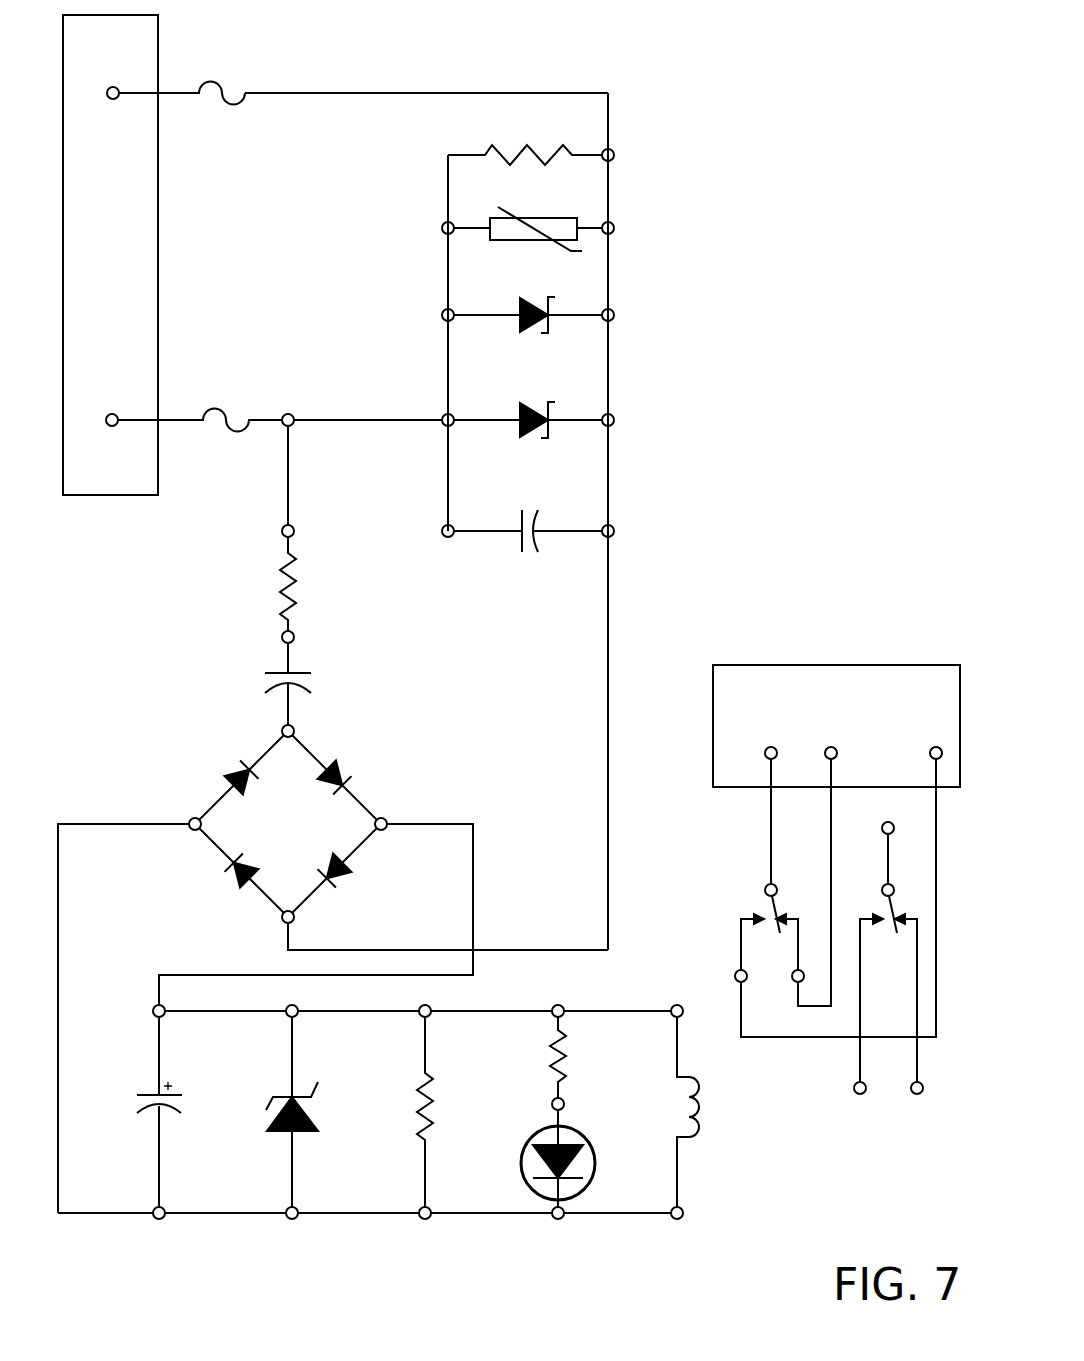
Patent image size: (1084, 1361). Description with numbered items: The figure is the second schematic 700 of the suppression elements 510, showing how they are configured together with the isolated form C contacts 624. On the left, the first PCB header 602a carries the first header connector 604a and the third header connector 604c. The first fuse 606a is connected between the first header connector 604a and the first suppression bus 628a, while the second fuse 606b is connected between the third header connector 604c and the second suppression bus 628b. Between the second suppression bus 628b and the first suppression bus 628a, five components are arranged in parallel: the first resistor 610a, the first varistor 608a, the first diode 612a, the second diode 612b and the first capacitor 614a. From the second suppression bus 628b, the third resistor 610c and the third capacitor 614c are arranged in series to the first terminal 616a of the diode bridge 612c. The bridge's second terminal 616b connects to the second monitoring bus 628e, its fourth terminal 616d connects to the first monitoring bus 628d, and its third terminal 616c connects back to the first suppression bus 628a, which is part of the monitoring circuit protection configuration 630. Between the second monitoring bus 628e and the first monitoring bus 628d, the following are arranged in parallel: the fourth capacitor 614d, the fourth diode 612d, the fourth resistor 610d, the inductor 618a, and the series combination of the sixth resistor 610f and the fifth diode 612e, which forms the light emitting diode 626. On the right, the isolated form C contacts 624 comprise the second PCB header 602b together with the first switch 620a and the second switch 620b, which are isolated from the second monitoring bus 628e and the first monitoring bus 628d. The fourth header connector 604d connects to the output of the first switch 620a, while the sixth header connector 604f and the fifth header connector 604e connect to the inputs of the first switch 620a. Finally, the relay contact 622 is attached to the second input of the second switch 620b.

The first PCB header 602a is at (110, 255).
The first header connector 604a is at (113, 111).
The third header connector 604c is at (112, 438).
The first fuse 606a is at (183, 73).
The second fuse 606b is at (200, 400).
The first varistor 608a is at (528, 207).
The first resistor 610a is at (531, 134).
The third resistor 610c is at (264, 534).
The fourth resistor 610d is at (400, 1112).
The sixth resistor 610f is at (531, 1057).
The first diode 612a is at (528, 293).
The second diode 612b is at (528, 398).
The diode bridge 612c is at (207, 757).
The fourth diode 612d is at (266, 1112).
The fifth diode 612e is at (532, 1158).
The first capacitor 614a is at (528, 510).
The third capacitor 614c is at (263, 684).
The fourth capacitor 614d is at (133, 1112).
The first terminal 616a is at (314, 719).
The second terminal 616b is at (404, 806).
The third terminal 616c is at (266, 935).
The fourth terminal 616d is at (169, 842).
The inductor 618a is at (717, 1112).
The first switch 620a is at (758, 920).
The second switch 620b is at (875, 958).
The K1 622 is at (917, 1107).
The isolated form C contacts 624 is at (898, 626).
The LED 626 is at (532, 1186).
The first suppression bus 628a is at (537, 93).
The second suppression bus 628b is at (408, 420).
The first monitoring bus 628d is at (225, 1214).
The second monitoring bus 628e is at (503, 1011).
The monitoring circuit protection configuration 630 is at (643, 773).
The second schematic 700 is at (772, 203).
The suppression elements 510 is at (880, 101).
The second PCB header 602b is at (836, 726).
The fourth header connector 604d is at (771, 736).
The fifth header connector 604e is at (831, 736).
The sixth header connector 604f is at (936, 736).